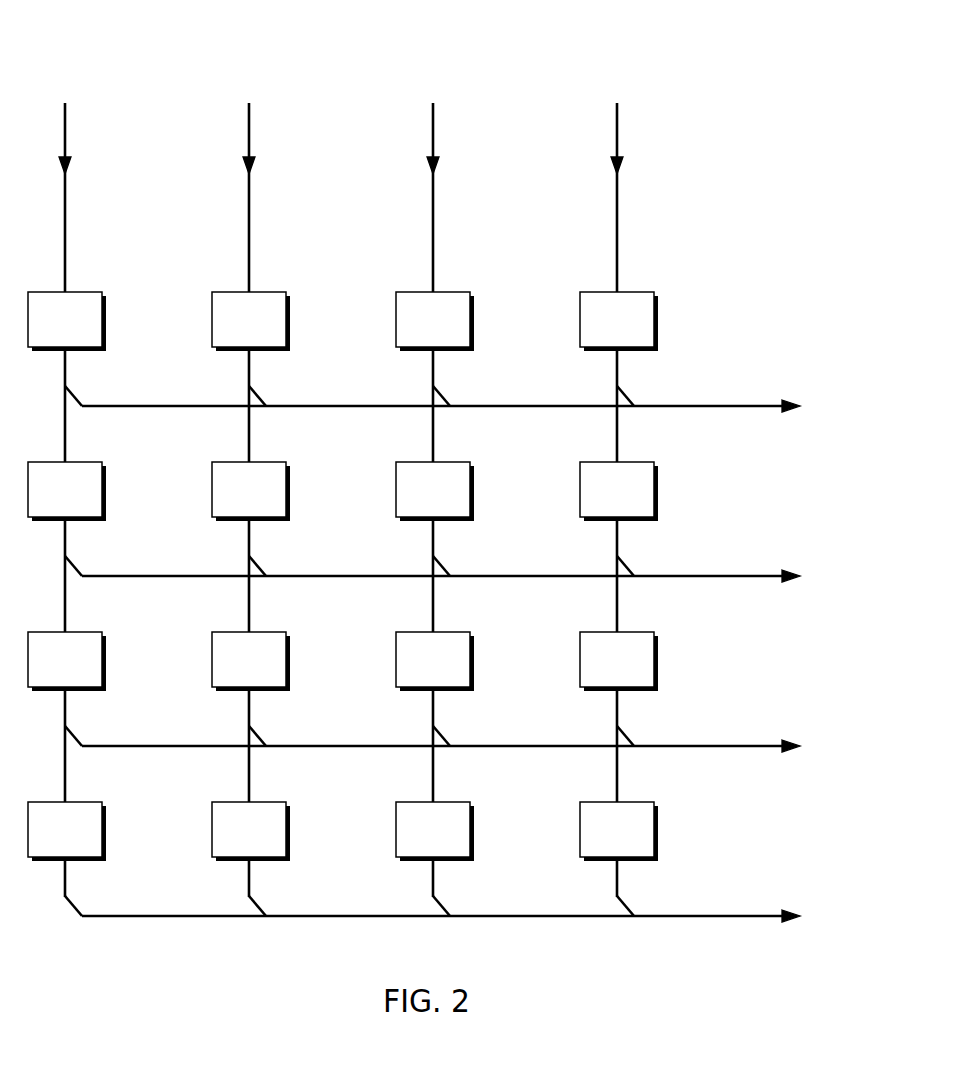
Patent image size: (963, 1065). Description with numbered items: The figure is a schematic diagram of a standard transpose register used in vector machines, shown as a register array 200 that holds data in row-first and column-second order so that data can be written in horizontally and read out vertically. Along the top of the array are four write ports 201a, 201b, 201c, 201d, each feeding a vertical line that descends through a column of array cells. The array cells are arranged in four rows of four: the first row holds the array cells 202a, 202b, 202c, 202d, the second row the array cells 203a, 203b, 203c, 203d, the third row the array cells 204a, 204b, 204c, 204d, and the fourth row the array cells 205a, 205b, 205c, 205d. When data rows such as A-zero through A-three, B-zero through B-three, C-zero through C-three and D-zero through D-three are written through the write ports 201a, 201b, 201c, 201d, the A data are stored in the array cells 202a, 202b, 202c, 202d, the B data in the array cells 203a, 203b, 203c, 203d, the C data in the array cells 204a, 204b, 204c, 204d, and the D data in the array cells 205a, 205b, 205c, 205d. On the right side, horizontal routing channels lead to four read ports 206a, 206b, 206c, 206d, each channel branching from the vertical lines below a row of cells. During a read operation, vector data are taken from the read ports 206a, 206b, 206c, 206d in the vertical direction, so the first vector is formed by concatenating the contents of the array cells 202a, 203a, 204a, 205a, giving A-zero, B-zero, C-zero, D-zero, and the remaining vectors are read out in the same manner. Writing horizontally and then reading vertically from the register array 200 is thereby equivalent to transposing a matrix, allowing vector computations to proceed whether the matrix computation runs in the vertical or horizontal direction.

The register array 200 is at (305, 32).
The write port 201a is at (96, 498).
The write port 201b is at (281, 498).
The write port 201c is at (466, 498).
The write port 201d is at (650, 498).
The array cell 202a is at (67, 321).
The array cell 202b is at (251, 321).
The array cell 202c is at (435, 321).
The array cell 202d is at (619, 321).
The array cell 203a is at (67, 491).
The array cell 203b is at (251, 491).
The array cell 203c is at (435, 491).
The array cell 203d is at (619, 491).
The array cell 204a is at (67, 661).
The array cell 204b is at (251, 661).
The array cell 204c is at (435, 661).
The array cell 204d is at (619, 661).
The array cell 205a is at (67, 831).
The array cell 205b is at (251, 831).
The array cell 205c is at (435, 831).
The array cell 205d is at (619, 831).
The read port 206a is at (481, 402).
The read port 206b is at (481, 572).
The read port 206c is at (481, 742).
The read port 206d is at (481, 912).